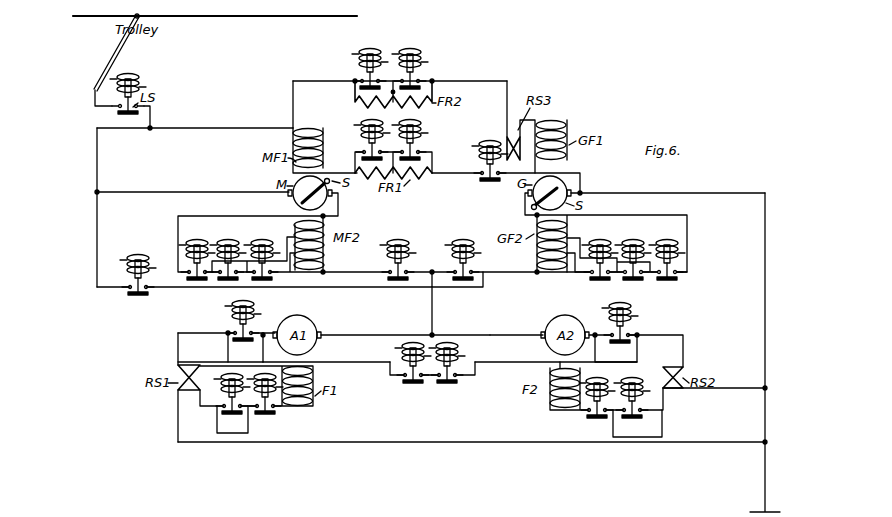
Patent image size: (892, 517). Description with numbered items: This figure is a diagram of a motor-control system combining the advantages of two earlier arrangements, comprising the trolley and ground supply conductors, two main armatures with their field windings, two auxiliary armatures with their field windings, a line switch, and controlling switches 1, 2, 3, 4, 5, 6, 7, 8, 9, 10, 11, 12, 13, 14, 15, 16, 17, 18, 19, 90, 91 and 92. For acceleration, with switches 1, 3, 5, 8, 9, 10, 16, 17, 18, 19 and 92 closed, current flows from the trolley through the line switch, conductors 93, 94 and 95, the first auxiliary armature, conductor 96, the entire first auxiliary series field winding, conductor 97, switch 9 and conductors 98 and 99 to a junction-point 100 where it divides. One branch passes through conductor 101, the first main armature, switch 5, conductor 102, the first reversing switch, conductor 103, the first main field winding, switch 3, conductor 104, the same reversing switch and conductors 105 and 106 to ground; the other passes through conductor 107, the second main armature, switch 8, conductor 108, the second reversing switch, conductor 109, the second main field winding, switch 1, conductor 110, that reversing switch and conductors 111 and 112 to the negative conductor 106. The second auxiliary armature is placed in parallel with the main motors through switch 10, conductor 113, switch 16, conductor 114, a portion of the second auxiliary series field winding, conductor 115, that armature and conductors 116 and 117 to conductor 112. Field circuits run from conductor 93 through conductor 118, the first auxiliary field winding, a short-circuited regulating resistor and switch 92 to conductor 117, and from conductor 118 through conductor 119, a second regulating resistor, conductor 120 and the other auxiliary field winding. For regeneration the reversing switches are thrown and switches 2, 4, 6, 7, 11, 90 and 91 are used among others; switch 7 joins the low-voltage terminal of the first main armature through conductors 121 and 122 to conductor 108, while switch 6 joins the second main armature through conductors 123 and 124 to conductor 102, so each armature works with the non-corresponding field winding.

The switch 1 is at (600, 418).
The switch 2 is at (630, 416).
The switch 3 is at (265, 416).
The switch 4 is at (232, 404).
The switch 5 is at (258, 322).
The switch 6 is at (413, 373).
The switch 7 is at (447, 373).
The switch 8 is at (611, 310).
The switch 9 is at (398, 250).
The switch 10 is at (463, 250).
The switch 11 is at (150, 296).
The switch 12 is at (262, 252).
The switch 13 is at (228, 252).
The switch 14 is at (197, 252).
The switch 15 is at (667, 251).
The switch 16 is at (633, 251).
The switch 17 is at (600, 251).
The switch 18 is at (358, 145).
The switch 19 is at (418, 150).
The switch 90 is at (370, 60).
The switch 91 is at (410, 60).
The switch 92 is at (478, 160).
The conductor 93 is at (155, 125).
The conductor 94 is at (96, 190).
The conductor 95 is at (232, 193).
The conductor 96 is at (339, 207).
The conductor 97 is at (352, 270).
The conductor 98 is at (412, 268).
The conductor 99 is at (430, 308).
The junction-point 100 is at (434, 332).
The conductor 101 is at (389, 334).
The conductor 102 is at (213, 332).
The conductor 103 is at (226, 363).
The conductor 104 is at (214, 414).
The conductor 105 is at (248, 447).
The negative conductor 106 is at (765, 459).
The conductor 107 is at (512, 334).
The conductor 108 is at (655, 340).
The conductor 109 is at (643, 362).
The conductor 110 is at (662, 408).
The conductor 111 is at (752, 394).
The conductor 112 is at (765, 420).
The conductor 113 is at (498, 281).
The conductor 114 is at (573, 237).
The conductor 115 is at (524, 207).
The conductor 116 is at (582, 192).
The conductor 117 is at (730, 191).
The conductor 118 is at (250, 132).
The conductor 119 is at (296, 114).
The conductor 120 is at (491, 109).
The conductor 121 is at (367, 353).
The conductor 122 is at (518, 366).
The conductor 123 is at (528, 358).
The conductor 124 is at (385, 369).